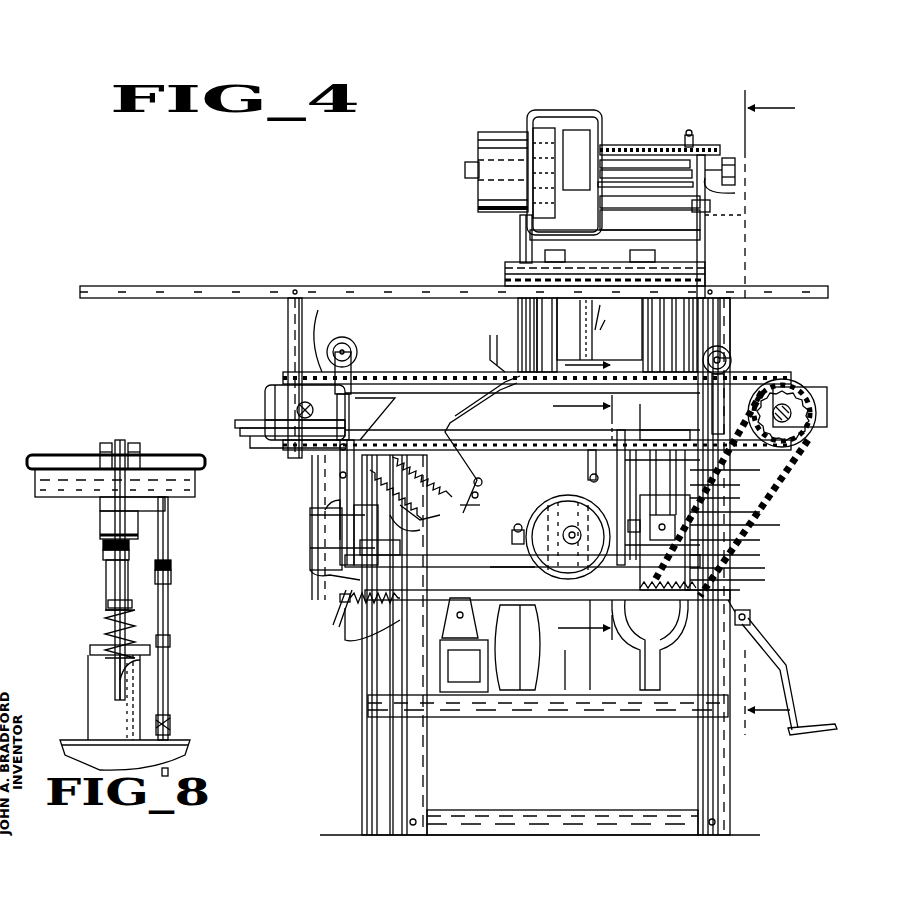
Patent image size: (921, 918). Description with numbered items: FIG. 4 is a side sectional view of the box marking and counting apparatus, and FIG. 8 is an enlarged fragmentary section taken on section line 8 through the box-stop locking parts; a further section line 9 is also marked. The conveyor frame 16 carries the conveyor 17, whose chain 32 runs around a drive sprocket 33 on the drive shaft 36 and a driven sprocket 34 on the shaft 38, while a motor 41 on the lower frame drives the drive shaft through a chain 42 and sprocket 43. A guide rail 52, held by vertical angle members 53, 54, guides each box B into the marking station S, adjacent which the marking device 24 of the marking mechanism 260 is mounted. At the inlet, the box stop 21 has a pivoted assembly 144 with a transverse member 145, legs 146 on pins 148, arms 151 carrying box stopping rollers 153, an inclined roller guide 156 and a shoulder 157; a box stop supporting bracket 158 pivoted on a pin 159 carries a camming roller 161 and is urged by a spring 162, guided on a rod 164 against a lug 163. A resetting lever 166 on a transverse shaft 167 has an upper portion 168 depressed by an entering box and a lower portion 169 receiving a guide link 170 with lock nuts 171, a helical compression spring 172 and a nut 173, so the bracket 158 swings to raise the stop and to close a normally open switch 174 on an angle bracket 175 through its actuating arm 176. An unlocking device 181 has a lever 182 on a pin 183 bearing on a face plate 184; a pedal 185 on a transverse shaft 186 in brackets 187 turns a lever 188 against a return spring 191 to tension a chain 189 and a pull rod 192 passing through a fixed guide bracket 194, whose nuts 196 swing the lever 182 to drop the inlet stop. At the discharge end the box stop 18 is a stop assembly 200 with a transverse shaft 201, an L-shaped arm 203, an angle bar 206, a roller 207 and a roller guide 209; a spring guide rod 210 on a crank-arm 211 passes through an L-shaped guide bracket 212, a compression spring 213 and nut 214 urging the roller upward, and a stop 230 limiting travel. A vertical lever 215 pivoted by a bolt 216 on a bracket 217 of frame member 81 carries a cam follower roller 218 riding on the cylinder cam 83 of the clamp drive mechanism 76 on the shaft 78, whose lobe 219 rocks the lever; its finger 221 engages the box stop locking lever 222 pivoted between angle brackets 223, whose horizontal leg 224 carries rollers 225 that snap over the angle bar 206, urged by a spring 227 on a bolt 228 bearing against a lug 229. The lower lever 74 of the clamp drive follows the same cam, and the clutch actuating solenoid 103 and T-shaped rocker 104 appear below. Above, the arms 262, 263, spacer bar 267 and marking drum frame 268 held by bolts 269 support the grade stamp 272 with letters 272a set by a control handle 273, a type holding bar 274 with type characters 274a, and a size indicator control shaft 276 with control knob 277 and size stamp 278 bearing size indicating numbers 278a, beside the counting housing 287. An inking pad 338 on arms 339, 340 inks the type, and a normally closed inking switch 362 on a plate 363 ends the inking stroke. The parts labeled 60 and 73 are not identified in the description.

In FIG. 4, the section line 8 is at (577, 517).
In FIG. 4, the section line 9 is at (770, 413).
In FIG. 4, the conveyor frame 16 is at (360, 690).
In FIG. 4, the conveyor 17 is at (795, 380).
In FIG. 4, the box stop 18 is at (735, 355).
In FIG. 4, the box stop 21 is at (356, 340).
In FIG. 4, the marking device 24 is at (505, 225).
In FIG. 4, the chain 32 is at (292, 385).
In FIG. 4, the drive sprocket 33 is at (800, 385).
In FIG. 4, the driven sprocket 34 is at (285, 400).
In FIG. 4, the drive shaft 36 is at (805, 405).
In FIG. 4, the shaft 38 is at (270, 400).
In FIG. 4, the motor 41 is at (610, 645).
In FIG. 4, the chain 42 is at (760, 510).
In FIG. 4, the sprocket 43 is at (792, 415).
In FIG. 4, the guide rail 52 is at (340, 288).
In FIG. 4, the vertical angle member 53 is at (288, 320).
In FIG. 4, the vertical angle member 54 is at (735, 310).
In FIG. 4, the block 60 is at (400, 555).
In FIG. 4, the pin 73 is at (588, 462).
In FIG. 4, the lower lever 74 is at (590, 478).
In FIG. 4, the clamp drive mechanism 76 is at (530, 535).
In FIG. 4, the shaft 78 is at (568, 550).
In FIG. 4, the frame member 81 is at (760, 555).
In FIG. 8, the frame member 81 is at (88, 666).
In FIG. 4, the cylinder cam 83 is at (530, 555).
In FIG. 4, the clutch actuating solenoid 103 is at (468, 660).
In FIG. 4, the T-shaped rocker 104 is at (524, 647).
In FIG. 4, the pivotally mounted assembly 144 is at (315, 312).
In FIG. 4, the transverse member 145 is at (299, 403).
In FIG. 4, the legs 146 is at (262, 430).
In FIG. 4, the pins 148 is at (260, 420).
In FIG. 4, the arms 151 is at (350, 366).
In FIG. 4, the box stopping roller 153 is at (352, 350).
In FIG. 4, the inclined roller guide 156 is at (396, 398).
In FIG. 4, the shoulder 157 is at (250, 444).
In FIG. 4, the box stop supporting bracket 158 is at (340, 490).
In FIG. 4, the pin 159 is at (310, 538).
In FIG. 4, the camming roller 161 is at (340, 447).
In FIG. 4, the spring 162 is at (340, 473).
In FIG. 4, the lug 163 is at (420, 530).
In FIG. 4, the rod 164 is at (420, 518).
In FIG. 4, the resetting lever 166 is at (485, 351).
In FIG. 4, the transverse shaft 167 is at (465, 420).
In FIG. 4, the upper portion 168 is at (497, 365).
In FIG. 4, the lower portion 169 is at (480, 478).
In FIG. 4, the guide link 170 is at (478, 492).
In FIG. 4, the lock nuts 171 is at (480, 504).
In FIG. 4, the helical compression spring 172 is at (427, 475).
In FIG. 4, the nut 173 is at (380, 465).
In FIG. 4, the normally open switch 174 is at (320, 553).
In FIG. 4, the angle bracket 175 is at (310, 571).
In FIG. 4, the actuating arm 176 is at (325, 510).
In FIG. 4, the unlocking device 181 is at (800, 675).
In FIG. 4, the lever 182 is at (336, 628).
In FIG. 4, the pin 183 is at (310, 550).
In FIG. 4, the face plate 184 is at (310, 522).
In FIG. 4, the pedal 185 is at (815, 727).
In FIG. 4, the transverse shaft 186 is at (750, 618).
In FIG. 4, the brackets 187 is at (752, 625).
In FIG. 4, the lever 188 is at (765, 580).
In FIG. 4, the chain 189 is at (740, 590).
In FIG. 4, the return spring 191 is at (765, 568).
In FIG. 4, the pull rod 192 is at (452, 618).
In FIG. 4, the fixed guide bracket 194 is at (345, 640).
In FIG. 4, the nuts 196 is at (340, 598).
In FIG. 4, the stop assembly 200 is at (568, 537).
In FIG. 4, the transverse shaft 201 is at (700, 440).
In FIG. 8, the transverse shaft 201 is at (58, 452).
In FIG. 4, the L-shaped arm 203 is at (725, 398).
In FIG. 4, the angle bar 206 is at (660, 430).
In FIG. 8, the angle bar 206 is at (140, 486).
In FIG. 4, the roller 207 is at (732, 360).
In FIG. 4, the roller guide 209 is at (760, 470).
In FIG. 8, the roller guide 209 is at (100, 505).
In FIG. 4, the spring guide rod 210 is at (735, 462).
In FIG. 4, the crank-arm 211 is at (650, 411).
In FIG. 4, the L-shaped guide bracket 212 is at (780, 525).
In FIG. 8, the L-shaped guide bracket 212 is at (106, 585).
In FIG. 4, the compression spring 213 is at (740, 485).
In FIG. 8, the compression spring 213 is at (103, 545).
In FIG. 4, the nut 214 is at (740, 498).
In FIG. 8, the nut 214 is at (103, 560).
In FIG. 4, the vertical lever 215 is at (569, 529).
In FIG. 8, the vertical lever 215 is at (168, 620).
In FIG. 8, the bolt 216 is at (171, 576).
In FIG. 8, the bracket 217 is at (171, 588).
In FIG. 4, the cam follower roller 218 is at (662, 520).
In FIG. 8, the cam follower roller 218 is at (170, 642).
In FIG. 4, the lobe 219 is at (760, 540).
In FIG. 8, the finger 221 is at (115, 518).
In FIG. 4, the box stop locking lever 222 is at (617, 436).
In FIG. 8, the box stop locking lever 222 is at (100, 533).
In FIG. 8, the angle brackets 223 is at (108, 630).
In FIG. 8, the horizontal leg 224 is at (104, 443).
In FIG. 8, the rollers 225 is at (134, 443).
In FIG. 8, the spring 227 is at (110, 648).
In FIG. 8, the bolt 228 is at (118, 680).
In FIG. 8, the lug 229 is at (105, 612).
In FIG. 4, the stop 230 is at (643, 527).
In FIG. 8, the stop 230 is at (100, 536).
In FIG. 4, the marking mechanism 260 is at (542, 106).
In FIG. 4, the arm 262 is at (690, 222).
In FIG. 4, the arm 263 is at (520, 262).
In FIG. 4, the spacer bar 267 is at (690, 240).
In FIG. 4, the marking drum frame 268 is at (572, 106).
In FIG. 4, the bolts 269 is at (710, 205).
In FIG. 4, the grade stamp 272 is at (608, 188).
In FIG. 4, the grade identifying type characters 272a is at (620, 160).
In FIG. 4, the control handle 273 is at (690, 132).
In FIG. 4, the type holding bar 274 is at (718, 148).
In FIG. 4, the type characters 274a is at (648, 148).
In FIG. 4, the size indicator control shaft 276 is at (740, 193).
In FIG. 4, the control knob 277 is at (740, 172).
In FIG. 4, the size stamp 278 is at (535, 128).
In FIG. 4, the size indicating number 278a is at (535, 190).
In FIG. 4, the housing 287 is at (478, 201).
In FIG. 4, the inking pad 338 is at (700, 275).
In FIG. 4, the arm 339 is at (700, 262).
In FIG. 4, the arm 340 is at (548, 262).
In FIG. 4, the inking switch 362 is at (607, 335).
In FIG. 4, the plate 363 is at (545, 330).
In FIG. 4, the box B is at (734, 217).
In FIG. 4, the marking station S is at (745, 242).